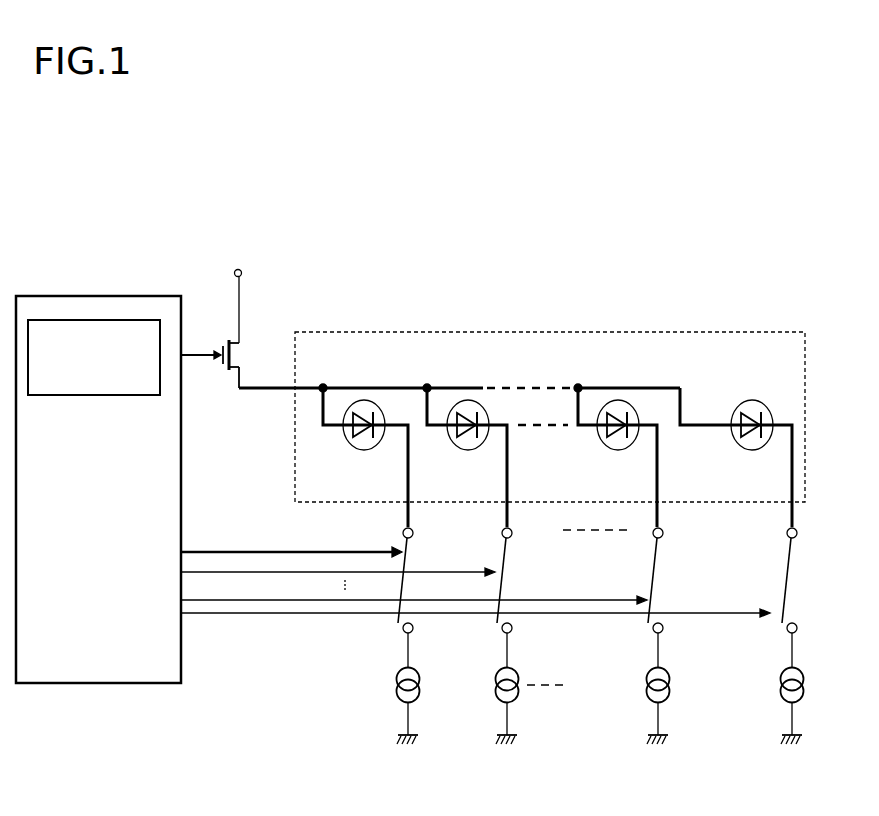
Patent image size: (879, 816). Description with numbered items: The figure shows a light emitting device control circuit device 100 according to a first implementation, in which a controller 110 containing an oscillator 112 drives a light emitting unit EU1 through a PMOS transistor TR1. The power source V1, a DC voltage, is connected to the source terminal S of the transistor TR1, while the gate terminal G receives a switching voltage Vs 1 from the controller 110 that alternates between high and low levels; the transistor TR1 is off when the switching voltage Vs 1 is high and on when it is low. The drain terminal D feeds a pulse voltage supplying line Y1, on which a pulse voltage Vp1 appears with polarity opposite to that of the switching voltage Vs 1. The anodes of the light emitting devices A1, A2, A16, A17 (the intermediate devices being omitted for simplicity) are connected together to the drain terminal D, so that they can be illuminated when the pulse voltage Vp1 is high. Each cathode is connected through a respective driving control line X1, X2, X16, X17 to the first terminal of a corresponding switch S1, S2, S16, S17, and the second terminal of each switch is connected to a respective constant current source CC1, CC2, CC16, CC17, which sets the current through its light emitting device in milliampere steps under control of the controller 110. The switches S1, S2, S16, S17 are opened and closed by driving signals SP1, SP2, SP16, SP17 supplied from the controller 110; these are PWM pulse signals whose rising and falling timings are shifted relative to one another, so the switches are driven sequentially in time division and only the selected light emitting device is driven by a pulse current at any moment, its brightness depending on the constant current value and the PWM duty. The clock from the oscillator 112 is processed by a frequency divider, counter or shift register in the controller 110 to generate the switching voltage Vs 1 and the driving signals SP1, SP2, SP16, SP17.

The light emitting device control circuit device 100 is at (450, 251).
The controller 110 is at (30, 296).
The oscillator 112 is at (122, 320).
The power source V1 is at (255, 303).
The transistor TR1 is at (253, 364).
The gate terminal G is at (201, 346).
The source terminal S is at (226, 327).
The drain terminal D is at (227, 388).
The switching voltage Vs 1 is at (184, 360).
The light emitting unit EU1 is at (742, 332).
The pulse voltage Vp1 is at (450, 376).
The pulse voltage supplying line Y1 is at (660, 388).
The light emitting device A1 is at (352, 446).
The light emitting device A2 is at (456, 446).
The light emitting device A16 is at (606, 446).
The light emitting device A17 is at (738, 446).
The driving control line X1 is at (405, 468).
The driving control line X2 is at (504, 468).
The driving control line X16 is at (654, 468).
The driving control line X17 is at (790, 468).
The driving signal SP1 is at (228, 534).
The driving signal SP2 is at (292, 578).
The driving signal SP16 is at (556, 599).
The driving signal SP17 is at (683, 612).
The switch S1 is at (412, 558).
The switch S2 is at (510, 560).
The switch S16 is at (661, 560).
The switch S17 is at (796, 556).
The constant current source CC1 is at (385, 688).
The constant current source CC2 is at (506, 688).
The constant current source CC16 is at (625, 688).
The constant current source CC17 is at (758, 688).